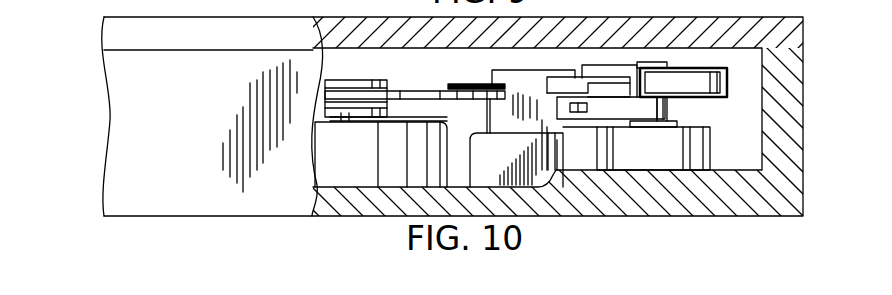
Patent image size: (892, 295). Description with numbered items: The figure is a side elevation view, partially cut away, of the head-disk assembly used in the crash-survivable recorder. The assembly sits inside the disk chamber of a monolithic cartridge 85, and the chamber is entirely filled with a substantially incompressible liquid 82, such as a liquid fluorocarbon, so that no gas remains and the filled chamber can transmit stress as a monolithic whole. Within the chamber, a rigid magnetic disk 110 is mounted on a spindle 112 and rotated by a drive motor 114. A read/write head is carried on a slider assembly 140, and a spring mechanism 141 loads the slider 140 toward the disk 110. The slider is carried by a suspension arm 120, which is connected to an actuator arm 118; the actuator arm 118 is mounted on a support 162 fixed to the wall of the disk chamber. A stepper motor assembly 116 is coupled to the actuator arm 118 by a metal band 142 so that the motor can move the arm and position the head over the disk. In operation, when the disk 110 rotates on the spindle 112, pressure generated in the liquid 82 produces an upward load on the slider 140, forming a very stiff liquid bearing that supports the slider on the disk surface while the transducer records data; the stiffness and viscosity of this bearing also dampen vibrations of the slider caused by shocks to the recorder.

The liquid 82 is at (743, 65).
The monolithic cartridge 85 is at (792, 133).
The rigid magnetic disk 110 is at (437, 97).
The spindle 112 is at (350, 80).
The drive motor 114 is at (324, 153).
The stepper motor assembly 116 is at (688, 148).
The actuator arm 118 is at (608, 67).
The suspension arm 120 is at (527, 85).
The slider assembly 140 is at (450, 85).
The spring mechanism 141 is at (456, 84).
The metal band 142 is at (684, 81).
The support 162 is at (553, 176).